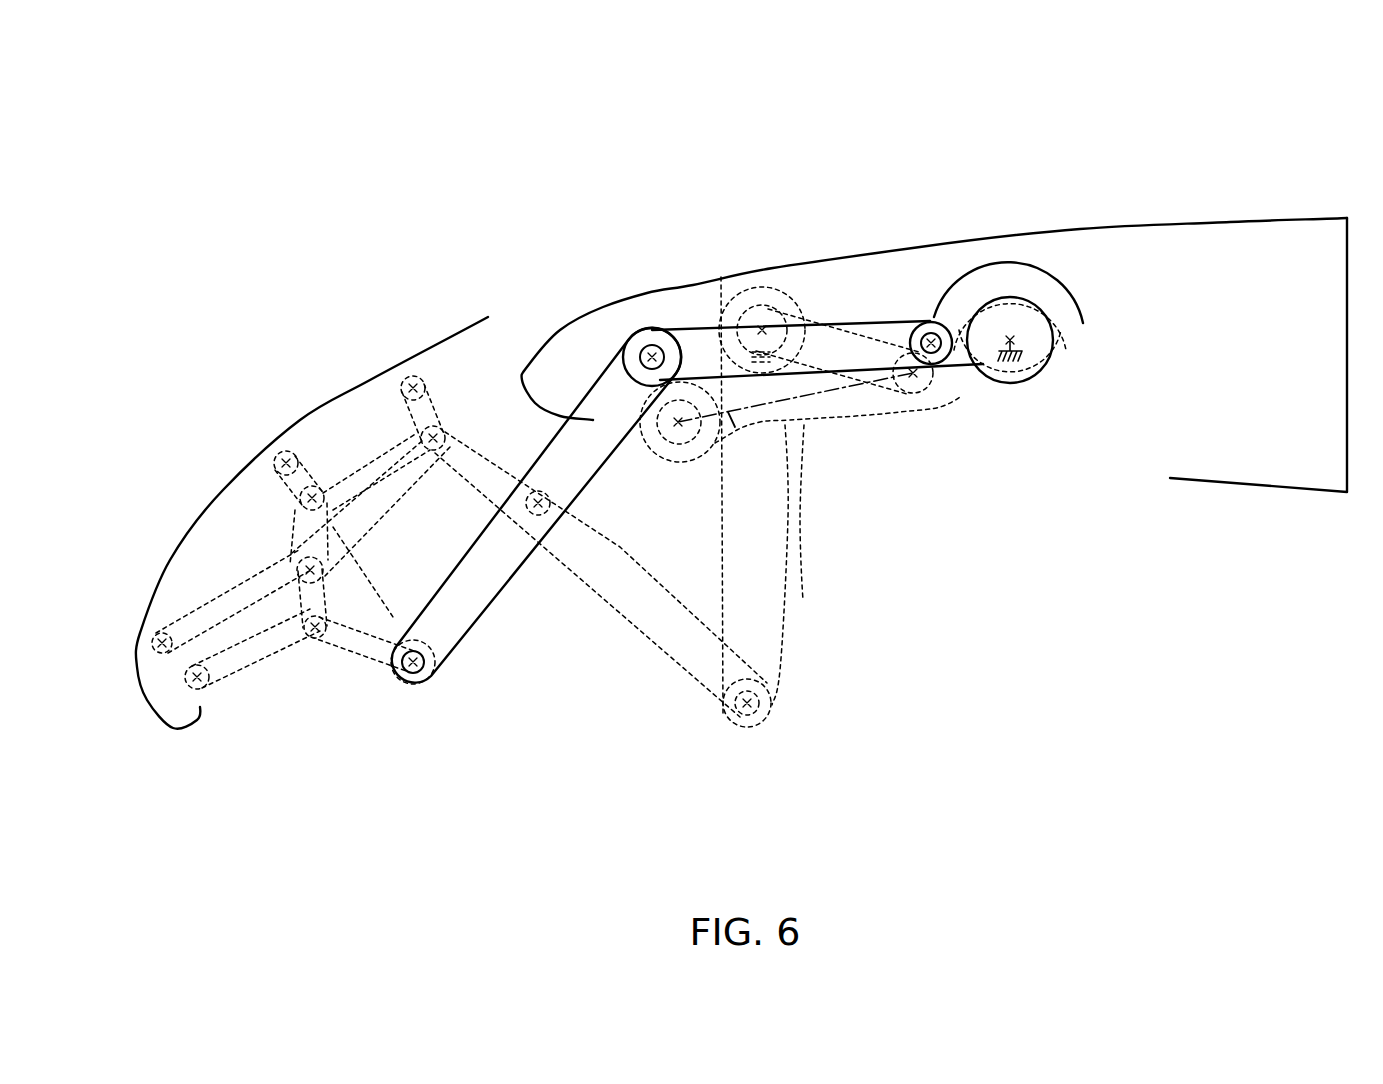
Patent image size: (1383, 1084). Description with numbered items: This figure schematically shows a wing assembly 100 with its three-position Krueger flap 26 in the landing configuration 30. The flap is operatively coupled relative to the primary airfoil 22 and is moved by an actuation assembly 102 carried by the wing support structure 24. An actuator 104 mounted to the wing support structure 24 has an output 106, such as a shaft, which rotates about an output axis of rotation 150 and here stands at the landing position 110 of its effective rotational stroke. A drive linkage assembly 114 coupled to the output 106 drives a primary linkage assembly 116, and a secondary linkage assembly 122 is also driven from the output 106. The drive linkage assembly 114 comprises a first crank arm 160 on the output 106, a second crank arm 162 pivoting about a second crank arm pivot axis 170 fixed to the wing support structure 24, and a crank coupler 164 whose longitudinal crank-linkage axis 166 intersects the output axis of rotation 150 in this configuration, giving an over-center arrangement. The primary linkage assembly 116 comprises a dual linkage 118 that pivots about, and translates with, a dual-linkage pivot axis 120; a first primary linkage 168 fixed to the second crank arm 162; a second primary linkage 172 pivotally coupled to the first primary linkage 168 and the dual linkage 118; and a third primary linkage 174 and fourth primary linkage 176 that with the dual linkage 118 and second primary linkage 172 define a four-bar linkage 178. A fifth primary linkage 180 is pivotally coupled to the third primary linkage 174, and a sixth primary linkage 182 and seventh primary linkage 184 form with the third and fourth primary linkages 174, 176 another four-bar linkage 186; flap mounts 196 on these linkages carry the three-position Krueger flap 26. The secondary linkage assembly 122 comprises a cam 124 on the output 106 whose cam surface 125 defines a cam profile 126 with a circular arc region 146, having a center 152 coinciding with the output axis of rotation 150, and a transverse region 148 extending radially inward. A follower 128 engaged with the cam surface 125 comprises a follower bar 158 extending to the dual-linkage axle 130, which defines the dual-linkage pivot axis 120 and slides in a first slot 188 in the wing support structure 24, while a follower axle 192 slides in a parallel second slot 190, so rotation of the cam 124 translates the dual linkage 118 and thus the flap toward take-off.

The primary airfoil 22 is at (1272, 217).
The wing support structure 24 is at (1163, 368).
The three-position Krueger flap 26 is at (225, 487).
The landing configuration 30 is at (215, 380).
The wing assembly 100 is at (1295, 100).
The actuation assembly 102 is at (1120, 572).
The actuator 104 is at (1062, 372).
The output 106 is at (1050, 367).
The landing position 110 is at (1033, 407).
The drive linkage assembly 114 is at (838, 435).
The primary linkage assembly 116 is at (483, 668).
The dual linkage 118 is at (503, 590).
The dual-linkage pivot axis 120 is at (645, 357).
The secondary linkage assembly 122 is at (853, 307).
The cam 124 is at (1061, 276).
The cam surface 125 is at (1073, 292).
The cam profile 126 is at (1085, 317).
The follower 128 is at (902, 320).
The dual-linkage axle 130 is at (664, 337).
The circular arc region 146 is at (1007, 258).
The transverse region 148 is at (972, 367).
The output axis of rotation 150 is at (1012, 340).
The center 152 is at (1012, 340).
The follower bar 158 is at (827, 320).
The first crank arm 160 is at (983, 362).
The second crank arm 162 is at (812, 440).
The crank coupler 164 is at (814, 432).
The longitudinal crank-linkage axis 166 is at (735, 428).
The first primary linkage 168 is at (767, 723).
The second crank arm pivot axis 170 is at (755, 300).
The second primary linkage 172 is at (647, 643).
The third primary linkage 174 is at (397, 653).
The fourth primary linkage 176 is at (230, 593).
The four-bar linkage 178 is at (380, 432).
The fifth primary linkage 180 is at (315, 470).
The sixth primary linkage 182 is at (233, 647).
The seventh primary linkage 184 is at (175, 665).
The four-bar linkage 186 is at (230, 690).
The first slot 188 is at (660, 330).
The second slot 190 is at (1007, 258).
The follower axle 192 is at (962, 325).
The flap mount 196 is at (130, 633).